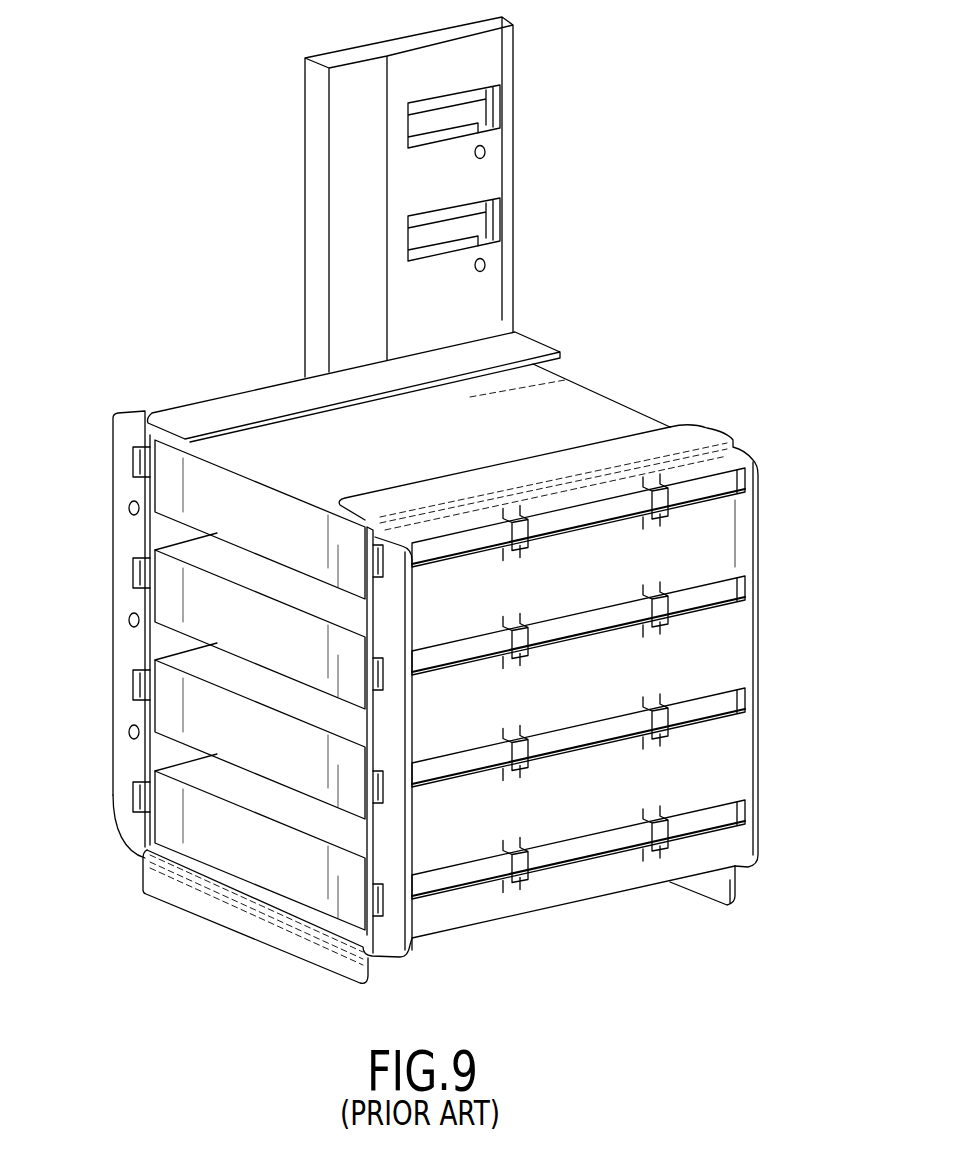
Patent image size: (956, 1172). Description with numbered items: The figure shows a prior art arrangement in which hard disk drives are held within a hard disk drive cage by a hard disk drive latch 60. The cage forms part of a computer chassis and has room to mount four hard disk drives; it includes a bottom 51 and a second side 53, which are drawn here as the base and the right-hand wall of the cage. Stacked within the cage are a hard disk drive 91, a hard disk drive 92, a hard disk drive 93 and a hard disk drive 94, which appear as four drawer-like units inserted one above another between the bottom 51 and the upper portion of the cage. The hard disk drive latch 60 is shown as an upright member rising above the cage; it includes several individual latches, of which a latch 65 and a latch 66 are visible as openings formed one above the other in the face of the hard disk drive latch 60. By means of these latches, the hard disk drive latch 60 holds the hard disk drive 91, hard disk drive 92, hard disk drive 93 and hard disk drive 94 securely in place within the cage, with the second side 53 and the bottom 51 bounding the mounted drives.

The bottom 51 is at (207, 905).
The second side 53 is at (760, 521).
The hard disk drive latch 60 is at (338, 57).
The latch 65 is at (470, 223).
The latch 66 is at (470, 110).
The hard disk drive 91 is at (165, 808).
The hard disk drive 92 is at (165, 696).
The hard disk drive 93 is at (165, 584).
The hard disk drive 94 is at (165, 473).